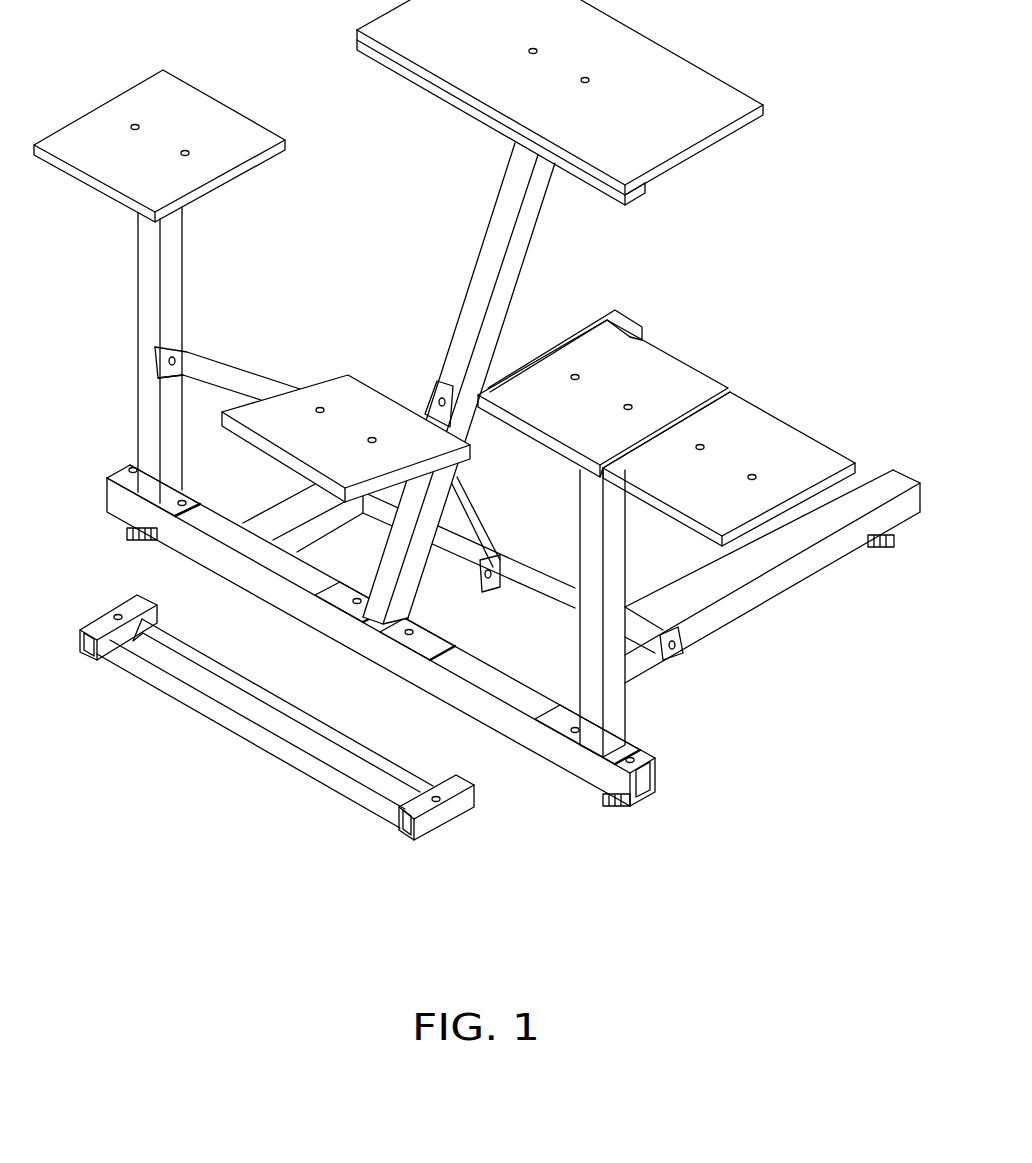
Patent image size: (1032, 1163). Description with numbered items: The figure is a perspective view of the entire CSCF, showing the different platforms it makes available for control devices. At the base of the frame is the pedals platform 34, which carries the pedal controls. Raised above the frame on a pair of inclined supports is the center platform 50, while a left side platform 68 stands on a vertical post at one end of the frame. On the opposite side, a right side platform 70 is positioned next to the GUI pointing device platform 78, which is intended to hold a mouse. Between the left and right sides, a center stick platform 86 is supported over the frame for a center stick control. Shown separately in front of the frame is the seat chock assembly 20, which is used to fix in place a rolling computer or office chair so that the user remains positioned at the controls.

The seat chock assembly 20 is at (272, 752).
The pedals platform 34 is at (540, 497).
The center platform 50 is at (545, 104).
The left side platform 68 is at (152, 171).
The right side platform 70 is at (716, 492).
The GUI pointing device platform 78 is at (593, 429).
The center stick platform 86 is at (346, 451).